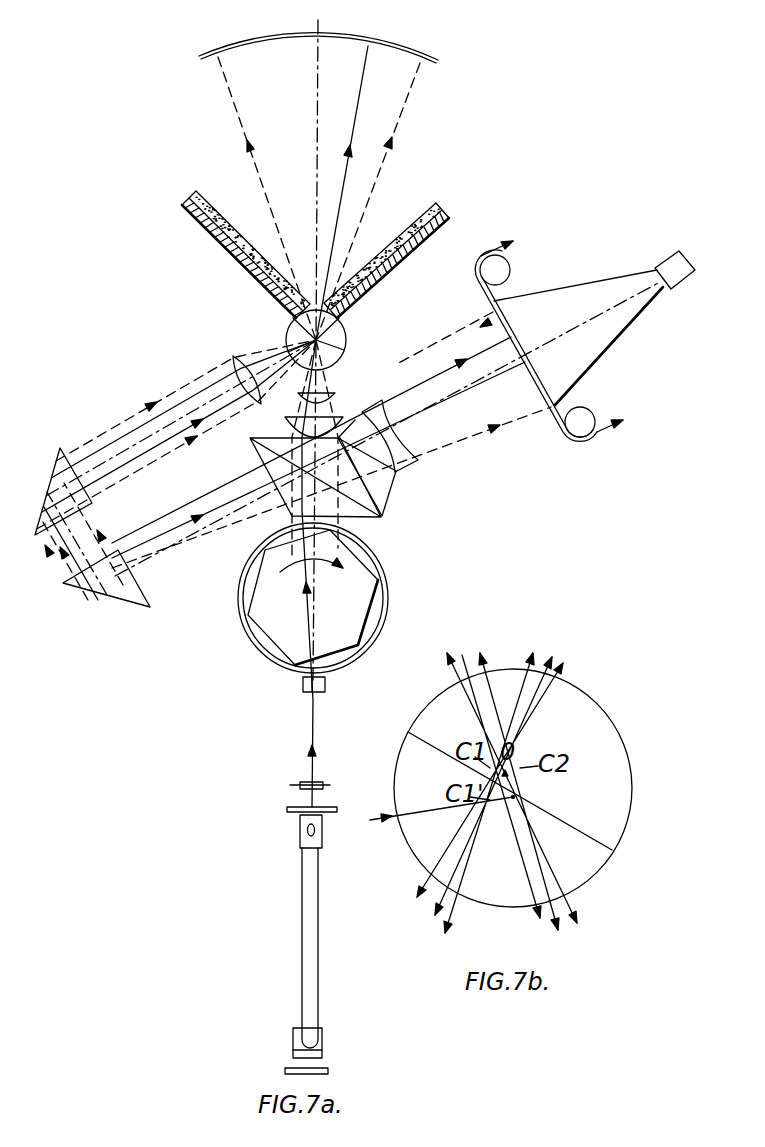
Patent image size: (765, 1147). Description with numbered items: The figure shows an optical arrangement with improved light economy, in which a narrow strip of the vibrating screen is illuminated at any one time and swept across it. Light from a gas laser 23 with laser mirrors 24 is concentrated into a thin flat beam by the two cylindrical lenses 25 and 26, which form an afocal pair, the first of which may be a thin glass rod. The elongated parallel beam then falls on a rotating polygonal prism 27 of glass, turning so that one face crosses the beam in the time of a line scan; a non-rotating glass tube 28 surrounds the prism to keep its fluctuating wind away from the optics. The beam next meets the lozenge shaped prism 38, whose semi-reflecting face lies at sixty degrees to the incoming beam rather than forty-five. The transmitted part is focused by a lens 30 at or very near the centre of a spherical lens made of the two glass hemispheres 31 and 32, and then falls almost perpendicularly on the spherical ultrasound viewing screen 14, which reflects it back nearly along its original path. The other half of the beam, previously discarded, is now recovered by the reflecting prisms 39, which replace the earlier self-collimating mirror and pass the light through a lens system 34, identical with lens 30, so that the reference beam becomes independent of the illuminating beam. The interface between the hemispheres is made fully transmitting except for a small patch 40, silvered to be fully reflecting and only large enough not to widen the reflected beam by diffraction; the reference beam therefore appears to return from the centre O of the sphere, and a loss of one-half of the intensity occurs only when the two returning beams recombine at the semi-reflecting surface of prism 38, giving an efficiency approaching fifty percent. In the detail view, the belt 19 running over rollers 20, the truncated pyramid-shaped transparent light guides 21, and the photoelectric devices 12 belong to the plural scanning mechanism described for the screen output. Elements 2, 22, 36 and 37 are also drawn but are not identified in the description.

In FIG. 7A, the spherical ultrasound viewing screen 14 is at (437, 64).
In FIG. 7A, the workpiece plates 2 is at (408, 255).
In FIG. 7A, the glass hemisphere 32 is at (335, 333).
In FIG. 7A, the lens system 34 is at (247, 339).
In FIG. 7A, the glass hemisphere 31 is at (338, 378).
In FIG. 7A, the lens 30 is at (336, 395).
In FIG. 7A, the lozenge shaped prism 38 is at (272, 460).
In FIG. 7A, the prism 37 is at (380, 478).
In FIG. 7A, the concave lens 36 is at (414, 463).
In FIG. 7A, the reflecting prism 39 is at (106, 598).
In FIG. 7A, the non-rotating glass tube 28 is at (388, 580).
In FIG. 7A, the rotating polygonal prism 27 is at (355, 610).
In FIG. 7A, the cylindrical lens 26 is at (303, 686).
In FIG. 7A, the cylindrical lens 25 is at (299, 783).
In FIG. 7A, the laser mirror 24 is at (293, 1070).
In FIG. 7A, the gas laser 23 is at (303, 940).
In FIG. 7A, the belt 19 is at (513, 239).
In FIG. 7A, the roller 20 is at (510, 270).
In FIG. 7A, the truncated pyramid-shaped transparent light guide 21 is at (616, 270).
In FIG. 7A, the photoelectric device 12 is at (672, 264).
In FIG. 7A, the film 22 is at (508, 344).
In FIG. 7B, the fully reflecting patch 40 is at (515, 796).